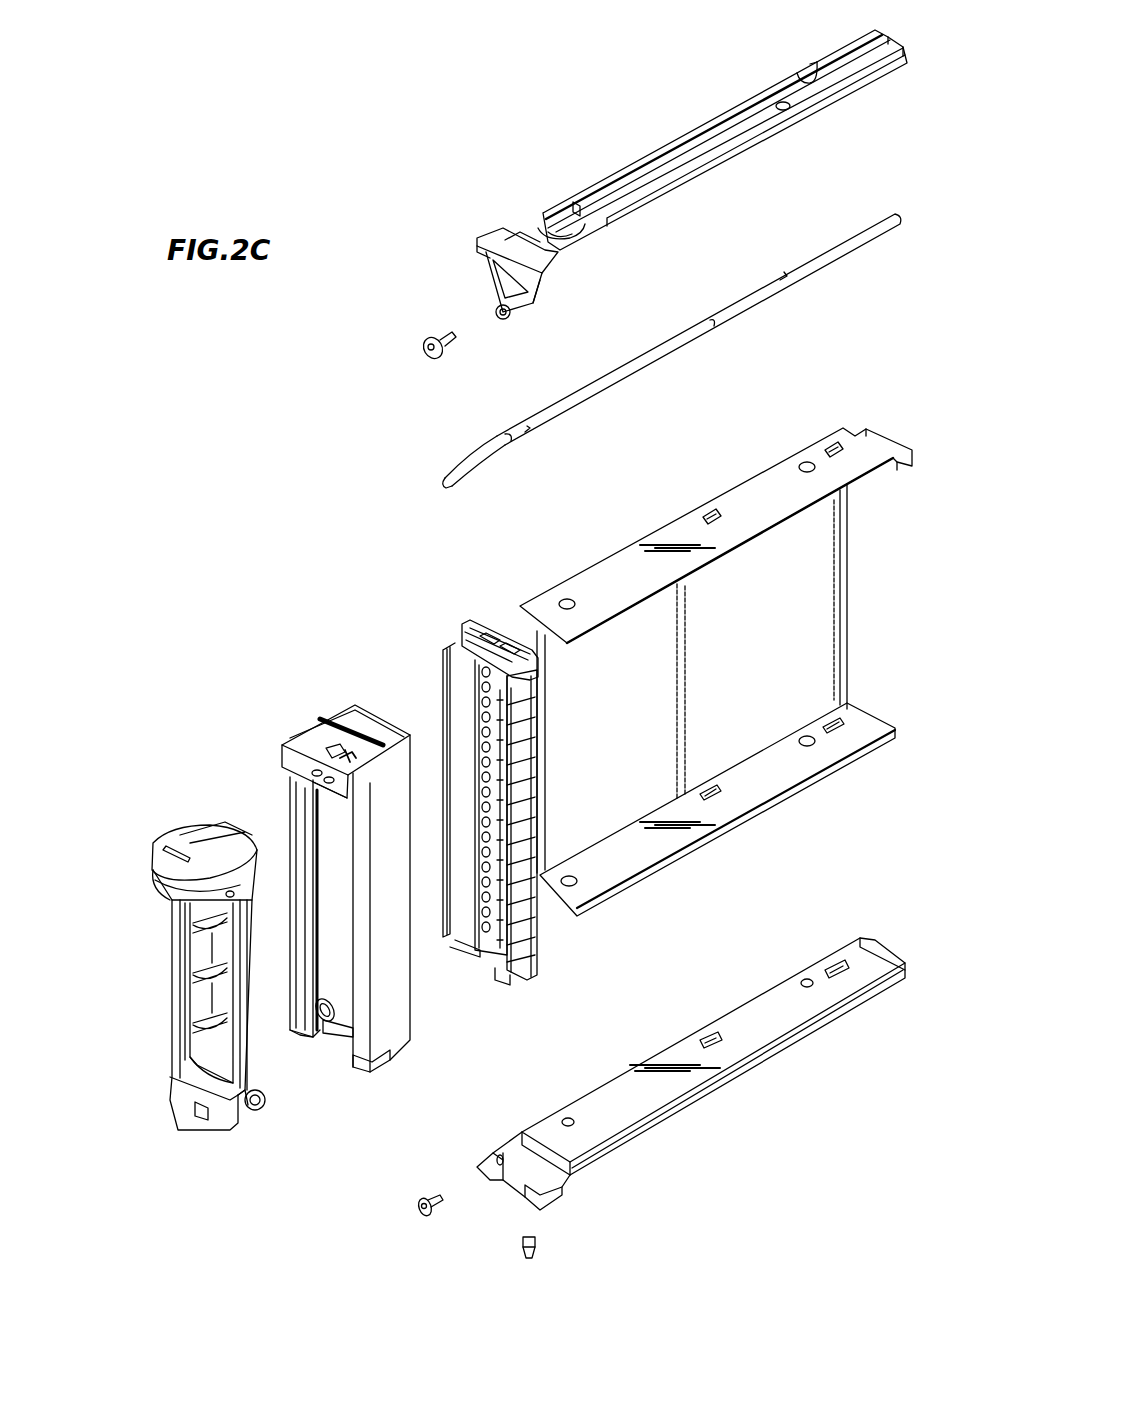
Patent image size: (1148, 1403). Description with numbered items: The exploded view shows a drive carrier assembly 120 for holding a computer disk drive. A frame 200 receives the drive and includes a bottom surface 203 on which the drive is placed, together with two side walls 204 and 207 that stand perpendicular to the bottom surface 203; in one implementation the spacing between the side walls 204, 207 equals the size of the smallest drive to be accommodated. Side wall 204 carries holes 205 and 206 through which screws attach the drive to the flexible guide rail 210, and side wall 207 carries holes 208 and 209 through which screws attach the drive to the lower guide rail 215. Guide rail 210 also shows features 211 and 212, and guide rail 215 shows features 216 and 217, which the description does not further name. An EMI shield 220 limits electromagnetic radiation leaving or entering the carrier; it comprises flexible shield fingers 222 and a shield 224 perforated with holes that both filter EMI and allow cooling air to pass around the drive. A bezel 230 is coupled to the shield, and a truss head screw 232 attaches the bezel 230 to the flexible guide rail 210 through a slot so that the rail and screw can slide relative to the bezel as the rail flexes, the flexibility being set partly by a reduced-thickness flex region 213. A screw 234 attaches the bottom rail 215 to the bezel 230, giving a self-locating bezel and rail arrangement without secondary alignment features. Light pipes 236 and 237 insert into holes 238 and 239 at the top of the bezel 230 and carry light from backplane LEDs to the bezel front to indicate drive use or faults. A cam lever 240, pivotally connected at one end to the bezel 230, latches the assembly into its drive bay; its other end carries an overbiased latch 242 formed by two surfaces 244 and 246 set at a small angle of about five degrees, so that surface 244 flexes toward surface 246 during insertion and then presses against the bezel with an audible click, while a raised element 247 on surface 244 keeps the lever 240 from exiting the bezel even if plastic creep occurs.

The drive carrier assembly 120 is at (340, 192).
The frame 200 is at (858, 625).
The bottom surface 203 is at (797, 609).
The side wall 204 is at (739, 498).
The hole 205 is at (806, 460).
The hole 206 is at (567, 596).
The side wall 207 is at (733, 805).
The hole 208 is at (805, 733).
The hole 209 is at (568, 873).
The flexible guide rail 210 is at (690, 118).
The notch 211 is at (800, 68).
The slot 212 is at (558, 218).
The flex region 213 is at (612, 238).
The bottom guide rail 215 is at (737, 1100).
The hole 216 is at (806, 978).
The hole 217 is at (565, 1116).
The EMI shield 220 is at (462, 618).
The flexible shield fingers 222 is at (510, 618).
The shield 224 is at (478, 680).
The bezel 230 is at (267, 742).
The truss head screw 232 is at (432, 330).
The screw 234 is at (412, 1208).
The light pipe 236 is at (662, 338).
The light pipe 237 is at (615, 390).
The hole 238 is at (313, 768).
The hole 239 is at (340, 752).
The cam lever 240 is at (167, 1017).
The overbiased latch 242 is at (139, 861).
The latch surface 244 is at (163, 832).
The latch surface 246 is at (160, 893).
The raised element 247 is at (199, 830).